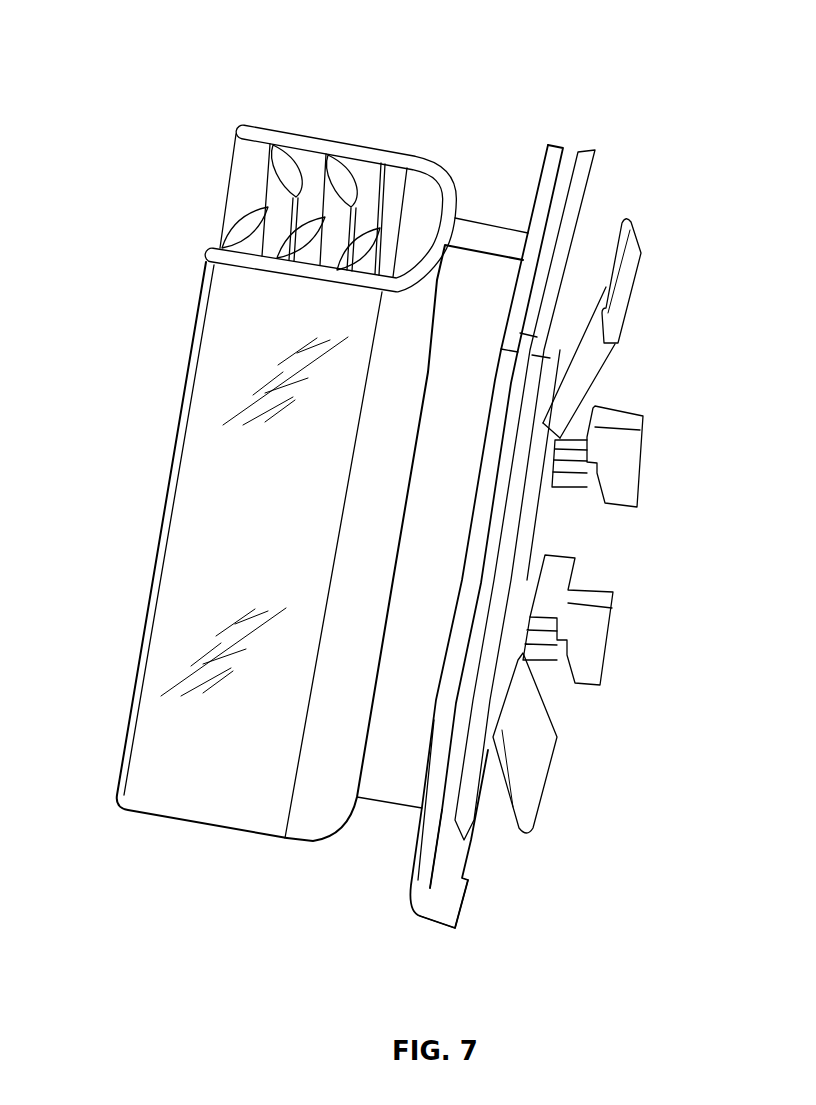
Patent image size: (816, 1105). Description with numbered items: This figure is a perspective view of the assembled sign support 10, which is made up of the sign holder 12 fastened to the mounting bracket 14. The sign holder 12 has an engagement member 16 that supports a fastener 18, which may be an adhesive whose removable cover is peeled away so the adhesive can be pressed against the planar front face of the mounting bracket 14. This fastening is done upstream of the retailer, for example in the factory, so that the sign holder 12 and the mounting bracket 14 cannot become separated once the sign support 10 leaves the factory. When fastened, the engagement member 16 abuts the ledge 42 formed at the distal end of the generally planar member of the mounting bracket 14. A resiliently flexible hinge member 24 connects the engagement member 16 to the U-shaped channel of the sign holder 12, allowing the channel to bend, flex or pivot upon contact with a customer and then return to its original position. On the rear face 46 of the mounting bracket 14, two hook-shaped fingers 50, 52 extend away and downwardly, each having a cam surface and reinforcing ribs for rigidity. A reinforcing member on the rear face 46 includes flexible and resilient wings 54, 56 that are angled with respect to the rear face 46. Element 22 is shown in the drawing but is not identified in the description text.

The sign support 10 is at (189, 53).
The sign holder 12 is at (292, 486).
The front wall of body 22 is at (140, 773).
The hinge member 24 is at (450, 513).
The rear face 46 is at (595, 150).
The mounting bracket 14 is at (628, 272).
The wing 54 is at (597, 400).
The hook-shaped finger 50 is at (615, 477).
The hook-shaped finger 52 is at (595, 635).
The wing 56 is at (540, 772).
The engagement member 16 is at (423, 858).
The fastener 18 is at (443, 845).
The ledge 42 is at (437, 913).